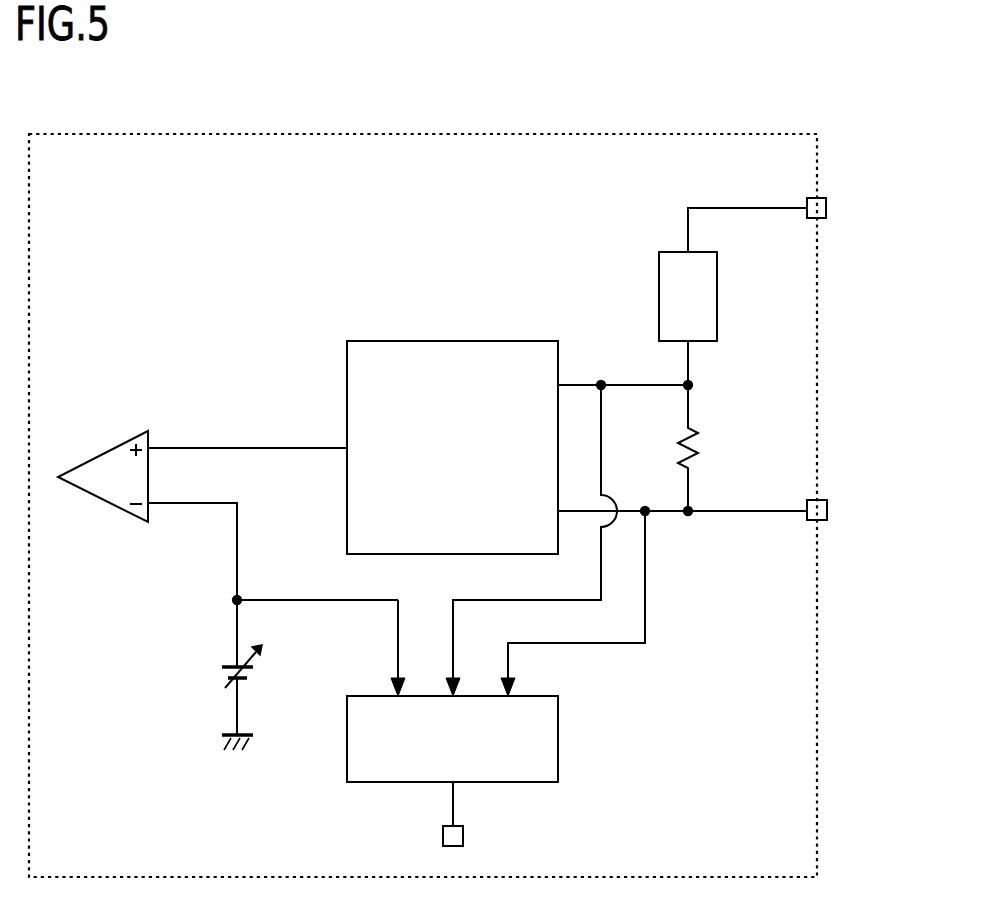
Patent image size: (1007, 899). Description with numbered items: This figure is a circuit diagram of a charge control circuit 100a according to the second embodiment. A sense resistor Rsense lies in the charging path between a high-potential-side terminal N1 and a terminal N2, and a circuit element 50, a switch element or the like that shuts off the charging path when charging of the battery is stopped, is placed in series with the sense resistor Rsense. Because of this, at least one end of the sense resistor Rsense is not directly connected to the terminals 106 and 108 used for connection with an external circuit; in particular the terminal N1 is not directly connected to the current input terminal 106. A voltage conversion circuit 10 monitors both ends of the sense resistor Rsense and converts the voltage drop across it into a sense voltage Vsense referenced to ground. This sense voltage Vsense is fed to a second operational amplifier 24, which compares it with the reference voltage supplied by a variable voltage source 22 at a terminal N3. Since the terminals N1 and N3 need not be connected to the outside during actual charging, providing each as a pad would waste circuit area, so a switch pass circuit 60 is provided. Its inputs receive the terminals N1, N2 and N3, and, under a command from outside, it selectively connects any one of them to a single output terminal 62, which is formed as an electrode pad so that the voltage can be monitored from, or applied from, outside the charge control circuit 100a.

The charge control circuit 100a is at (427, 134).
The current input terminal 106 is at (826, 200).
The circuit element 50 is at (717, 297).
The voltage conversion circuit 10 is at (452, 341).
The high-potential-side terminal N1 is at (690, 388).
The sense resistor Rsense is at (737, 448).
The terminal of the sense resistor N2 is at (690, 513).
The terminal 108 is at (827, 502).
The sense voltage Vsense is at (247, 430).
The second operational amplifier 24 is at (103, 454).
The terminal N3 is at (273, 585).
The variable voltage source 22 is at (222, 672).
The switch pass circuit 60 is at (558, 738).
The output terminal 62 is at (463, 836).